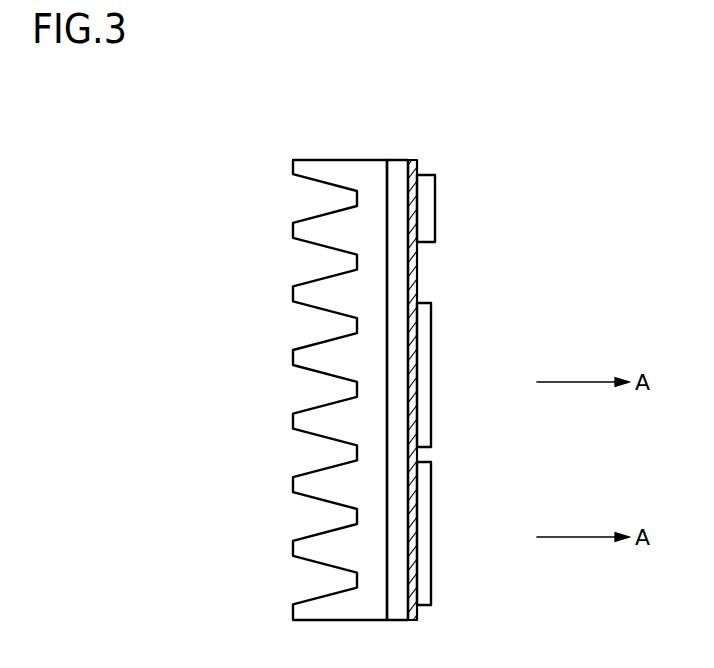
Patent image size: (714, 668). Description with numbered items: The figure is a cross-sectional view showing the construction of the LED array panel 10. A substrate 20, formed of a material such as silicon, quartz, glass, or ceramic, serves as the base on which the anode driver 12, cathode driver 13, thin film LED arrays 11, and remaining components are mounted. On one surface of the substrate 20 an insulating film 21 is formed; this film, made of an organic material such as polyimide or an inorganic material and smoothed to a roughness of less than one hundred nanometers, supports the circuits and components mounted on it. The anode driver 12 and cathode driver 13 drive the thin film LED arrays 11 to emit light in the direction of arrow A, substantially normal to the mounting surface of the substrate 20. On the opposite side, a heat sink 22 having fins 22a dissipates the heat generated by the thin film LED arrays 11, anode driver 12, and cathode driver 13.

The LED array panel 10 is at (378, 87).
The heat sink 22 is at (325, 159).
The fins 22a is at (293, 295).
The substrate 20 is at (401, 159).
The insulating film 21 is at (418, 268).
The anode driver 12 is at (470, 208).
The cathode driver 13 is at (436, 205).
The thin film LED arrays 11 is at (433, 342).